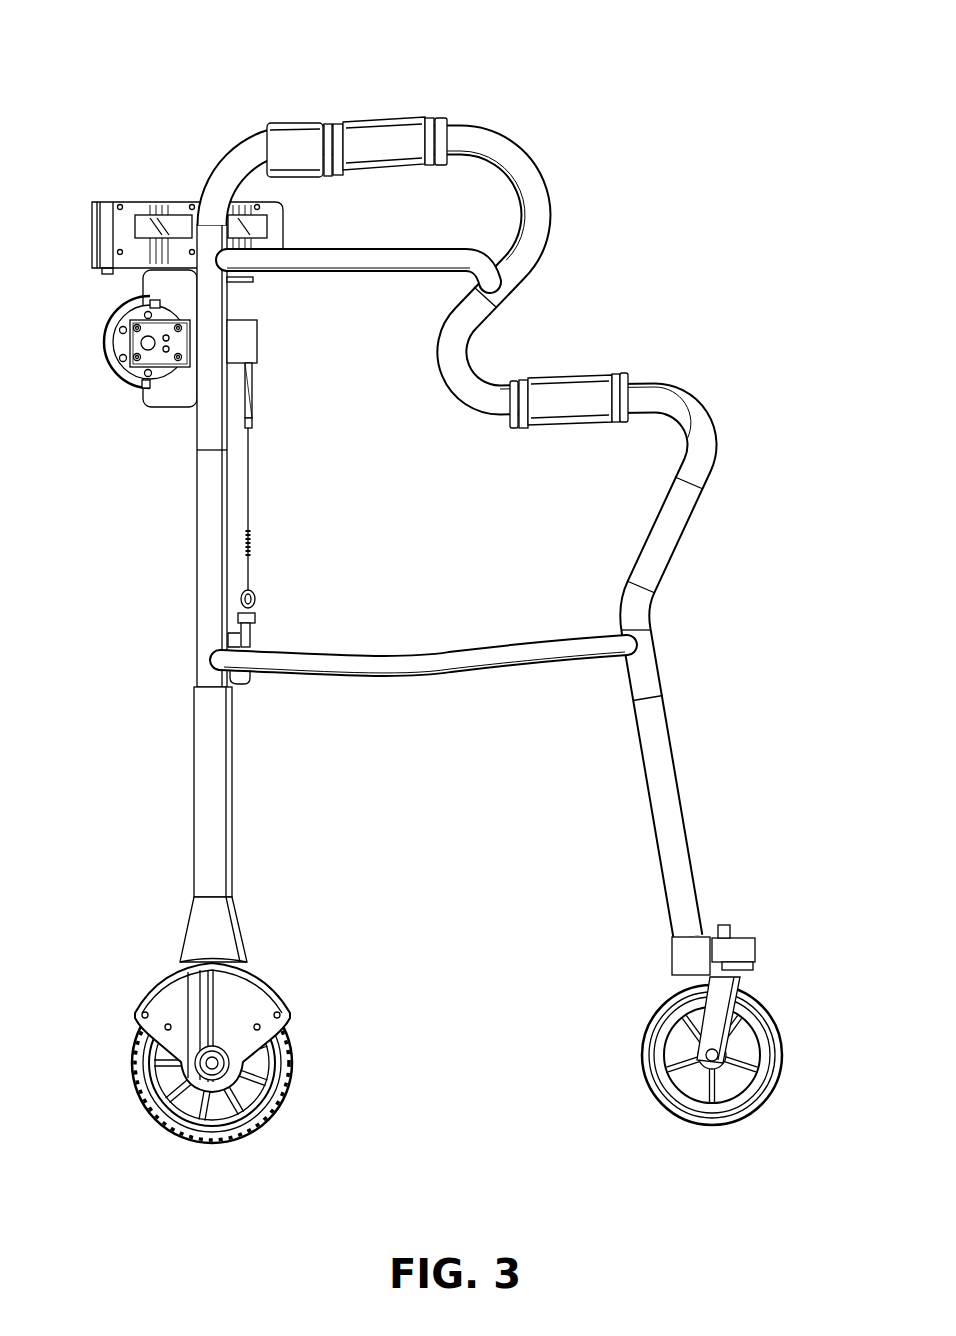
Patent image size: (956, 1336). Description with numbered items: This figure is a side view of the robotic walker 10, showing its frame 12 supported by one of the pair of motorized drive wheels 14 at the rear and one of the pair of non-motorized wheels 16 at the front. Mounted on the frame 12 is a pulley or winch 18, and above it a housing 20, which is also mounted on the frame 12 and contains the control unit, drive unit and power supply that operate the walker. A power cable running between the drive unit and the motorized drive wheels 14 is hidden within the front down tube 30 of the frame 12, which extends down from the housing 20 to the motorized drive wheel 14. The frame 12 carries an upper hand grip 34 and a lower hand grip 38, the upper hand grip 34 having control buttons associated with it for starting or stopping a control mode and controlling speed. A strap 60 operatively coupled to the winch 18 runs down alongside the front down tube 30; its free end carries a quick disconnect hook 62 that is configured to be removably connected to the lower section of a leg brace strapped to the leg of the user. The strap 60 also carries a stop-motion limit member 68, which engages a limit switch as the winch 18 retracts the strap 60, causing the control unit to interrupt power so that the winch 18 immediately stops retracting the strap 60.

The robotic walker 10 is at (547, 64).
The frame 12 is at (556, 212).
The motorized drive wheels 14 is at (289, 1065).
The non-motorized wheels 16 is at (779, 1043).
The winch 18 is at (105, 342).
The housing 20 is at (132, 203).
The front down tube 30 is at (199, 593).
The upper hand grip 34 is at (394, 122).
The lower hand grip 38 is at (583, 383).
The strap 60 is at (249, 485).
The quick disconnect hook 62 is at (252, 636).
The stop-motion limit member 68 is at (253, 423).